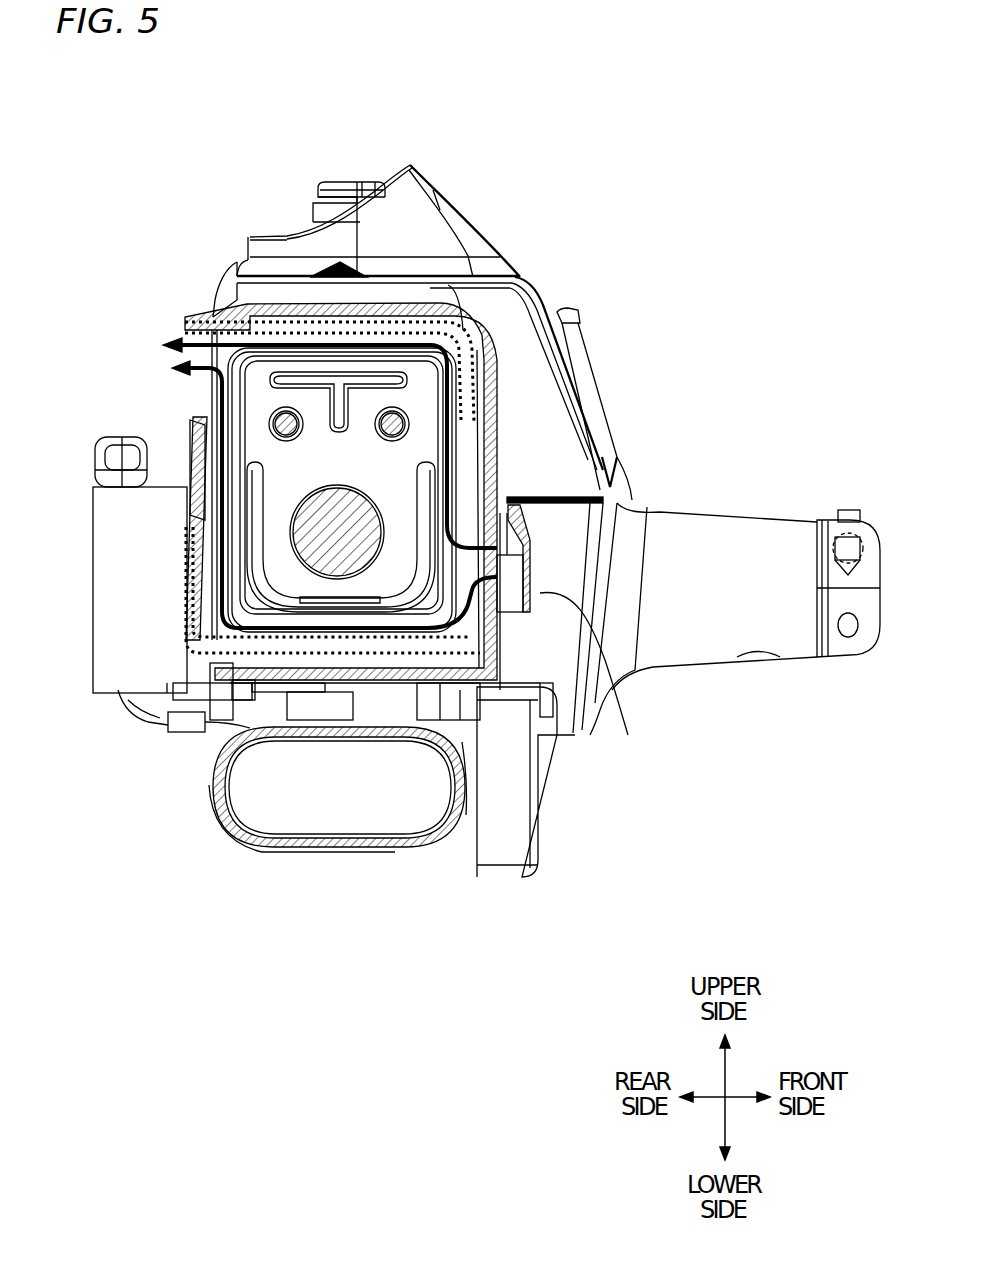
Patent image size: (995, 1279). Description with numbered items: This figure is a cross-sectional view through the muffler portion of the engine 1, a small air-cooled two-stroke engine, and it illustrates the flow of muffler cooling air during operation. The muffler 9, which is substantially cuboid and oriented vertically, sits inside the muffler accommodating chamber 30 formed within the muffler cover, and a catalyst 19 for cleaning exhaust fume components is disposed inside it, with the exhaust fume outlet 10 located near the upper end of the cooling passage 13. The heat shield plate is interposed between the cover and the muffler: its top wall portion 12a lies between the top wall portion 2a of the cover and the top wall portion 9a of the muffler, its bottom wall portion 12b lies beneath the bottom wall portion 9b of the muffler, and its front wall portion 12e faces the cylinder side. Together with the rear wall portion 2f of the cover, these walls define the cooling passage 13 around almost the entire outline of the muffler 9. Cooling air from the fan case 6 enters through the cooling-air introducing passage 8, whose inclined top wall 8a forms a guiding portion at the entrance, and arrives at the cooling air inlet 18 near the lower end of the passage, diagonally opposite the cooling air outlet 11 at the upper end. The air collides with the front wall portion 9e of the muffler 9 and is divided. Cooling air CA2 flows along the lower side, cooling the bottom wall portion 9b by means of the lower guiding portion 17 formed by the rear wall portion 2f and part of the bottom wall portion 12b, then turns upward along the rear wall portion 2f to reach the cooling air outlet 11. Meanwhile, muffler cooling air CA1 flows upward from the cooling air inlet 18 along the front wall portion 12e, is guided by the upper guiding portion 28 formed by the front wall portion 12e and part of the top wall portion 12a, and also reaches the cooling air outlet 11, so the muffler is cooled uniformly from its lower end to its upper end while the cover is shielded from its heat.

The engine 1 is at (722, 131).
The top wall portion of the muffler cover 2a is at (288, 302).
The rear wall portion of the muffler cover 2f is at (193, 508).
The fan case 6 is at (600, 710).
The cooling-air introducing passage 8 is at (530, 562).
The top wall of the cooling air inlet 8a is at (513, 493).
The muffler 9 is at (480, 385).
The top wall portion of the muffler 9a is at (387, 327).
The bottom wall portion of the muffler 9b is at (247, 607).
The front wall portion of the muffler 9e is at (577, 737).
The exhaust fume outlet 10 is at (237, 388).
The cooling air outlet 11 is at (190, 390).
The top wall portion of the heat shield plate 12a is at (247, 323).
The bottom wall portion of the heat shield plate 12b is at (273, 647).
The front wall portion of the heat shield plate 12e is at (503, 490).
The cooling passage 13 is at (210, 612).
The lower guiding portion 17 is at (183, 582).
The cooling air inlet 18 is at (575, 600).
The catalyst 19 is at (360, 497).
The upper guiding portion 28 is at (358, 197).
The muffler accommodating chamber 30 is at (328, 665).
The muffler cooling air CA1 is at (316, 431).
The cooling air CA2 is at (310, 491).